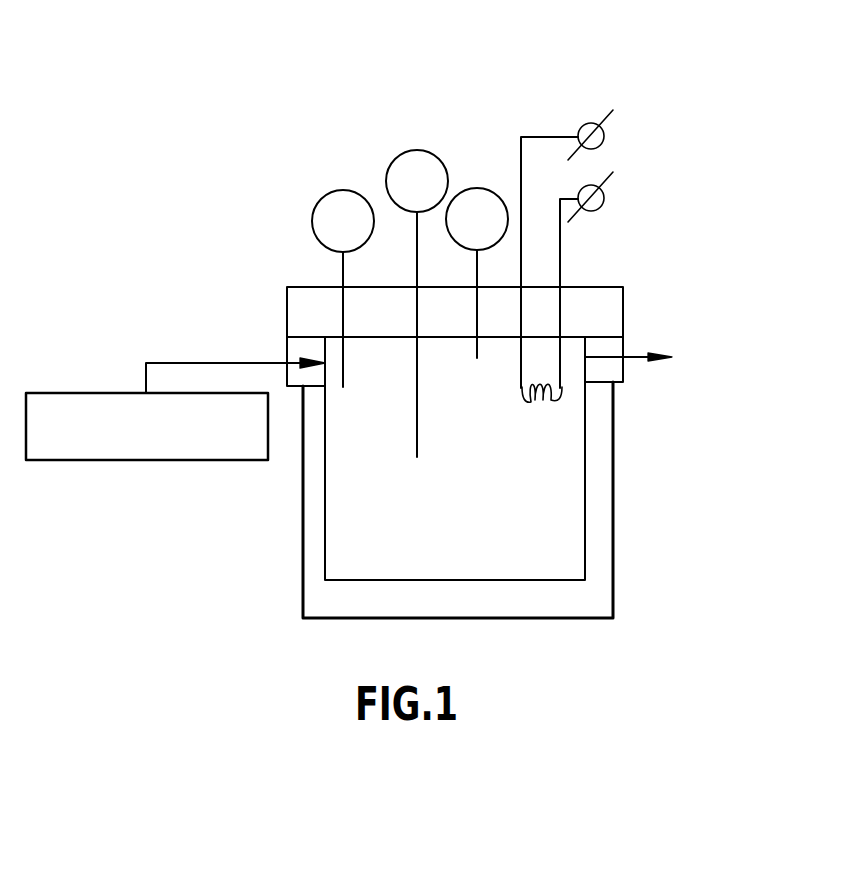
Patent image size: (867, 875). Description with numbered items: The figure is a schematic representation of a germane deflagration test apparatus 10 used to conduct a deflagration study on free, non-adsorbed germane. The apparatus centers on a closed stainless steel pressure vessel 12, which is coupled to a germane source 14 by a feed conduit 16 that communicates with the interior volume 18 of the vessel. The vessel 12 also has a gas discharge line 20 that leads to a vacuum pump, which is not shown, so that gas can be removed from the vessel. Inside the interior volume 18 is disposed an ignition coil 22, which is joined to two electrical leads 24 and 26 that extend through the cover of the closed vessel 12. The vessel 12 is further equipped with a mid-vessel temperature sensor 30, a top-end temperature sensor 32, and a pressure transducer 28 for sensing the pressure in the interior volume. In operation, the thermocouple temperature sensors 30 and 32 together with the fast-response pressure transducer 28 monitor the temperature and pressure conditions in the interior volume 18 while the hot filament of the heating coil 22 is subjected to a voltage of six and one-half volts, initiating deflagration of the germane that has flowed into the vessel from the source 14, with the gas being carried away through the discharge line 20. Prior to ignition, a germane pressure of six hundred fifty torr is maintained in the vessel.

The germane deflagration test apparatus 10 is at (212, 68).
The stainless steel pressure vessel 12 is at (615, 562).
The germane source 14 is at (83, 462).
The feed conduit 16 is at (183, 363).
The interior volume 18 is at (562, 498).
The gas discharge line 20 is at (632, 357).
The ignition coil 22 is at (533, 403).
The electrical lead 24 is at (562, 257).
The electrical lead 26 is at (540, 136).
The pressure transducer 28 is at (318, 200).
The mid-vessel temperature sensor 30 is at (403, 152).
The top-end temperature sensor 32 is at (478, 189).